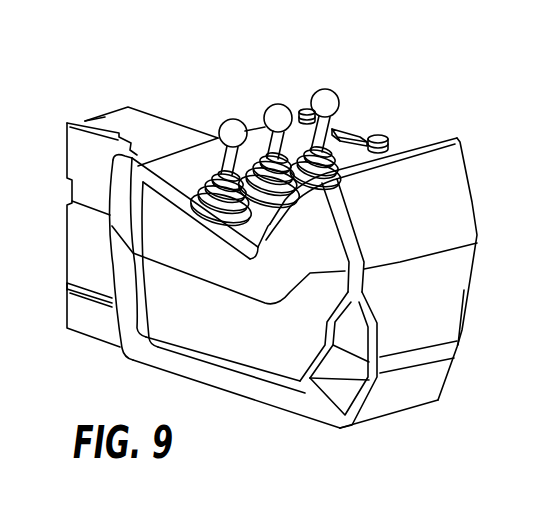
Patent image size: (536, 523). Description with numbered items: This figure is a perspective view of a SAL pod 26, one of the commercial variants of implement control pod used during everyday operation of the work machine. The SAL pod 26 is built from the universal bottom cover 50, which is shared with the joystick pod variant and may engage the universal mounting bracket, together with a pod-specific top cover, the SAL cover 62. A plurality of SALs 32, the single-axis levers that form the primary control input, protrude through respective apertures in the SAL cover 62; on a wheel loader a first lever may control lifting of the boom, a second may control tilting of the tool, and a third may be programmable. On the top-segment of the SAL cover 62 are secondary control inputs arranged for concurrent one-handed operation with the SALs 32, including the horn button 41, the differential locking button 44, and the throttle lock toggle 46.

The SAL pod 26 is at (163, 80).
The SALs 32 is at (229, 119).
The horn button 41 is at (303, 109).
The differential locking button 44 is at (382, 134).
The throttle lock toggle 46 is at (343, 129).
The universal bottom cover 50 is at (450, 306).
The SAL cover 62 is at (459, 186).